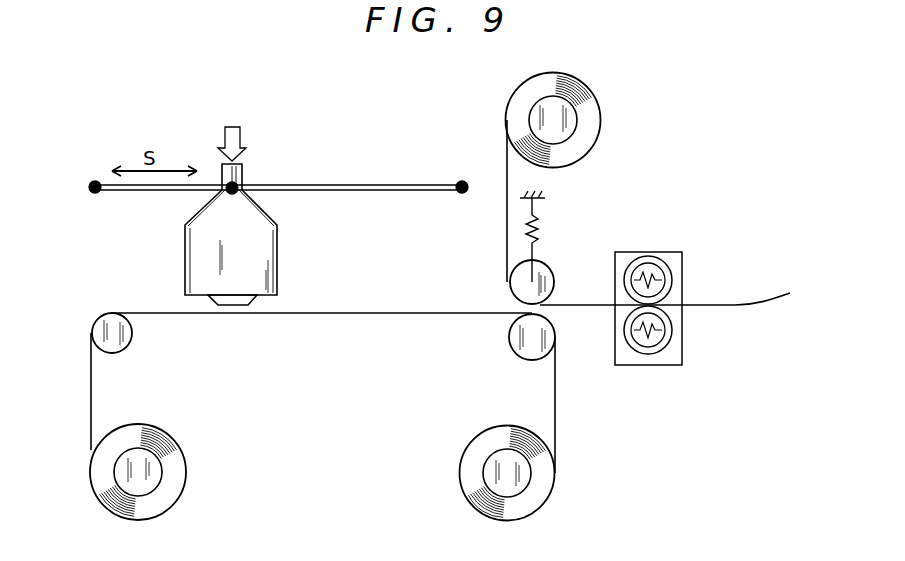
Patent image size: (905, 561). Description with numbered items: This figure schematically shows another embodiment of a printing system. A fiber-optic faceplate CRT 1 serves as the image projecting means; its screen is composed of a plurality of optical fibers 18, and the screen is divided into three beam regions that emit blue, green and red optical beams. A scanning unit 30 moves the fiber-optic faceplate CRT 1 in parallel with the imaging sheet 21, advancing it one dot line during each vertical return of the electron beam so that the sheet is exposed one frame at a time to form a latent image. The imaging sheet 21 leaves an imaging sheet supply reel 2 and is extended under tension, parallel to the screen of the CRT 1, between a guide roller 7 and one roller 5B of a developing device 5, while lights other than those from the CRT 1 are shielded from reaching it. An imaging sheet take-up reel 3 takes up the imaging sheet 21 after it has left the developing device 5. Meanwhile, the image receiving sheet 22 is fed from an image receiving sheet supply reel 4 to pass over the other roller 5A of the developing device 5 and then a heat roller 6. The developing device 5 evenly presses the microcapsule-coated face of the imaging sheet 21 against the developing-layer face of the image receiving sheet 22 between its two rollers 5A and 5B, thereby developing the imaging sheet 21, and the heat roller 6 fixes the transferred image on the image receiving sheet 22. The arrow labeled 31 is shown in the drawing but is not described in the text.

The fiber-optic faceplate CRT 1 is at (185, 255).
The imaging sheet supply reel 2 is at (142, 470).
The imaging sheet take-up reel 3 is at (496, 460).
The image receiving sheet supply reel 4 is at (568, 124).
The developing device 5 is at (550, 265).
The roller of developing device 5A is at (554, 278).
The roller of developing device 5B is at (511, 340).
The heat roller 6 is at (650, 368).
The guide roller 7 is at (92, 333).
The optical fibers 18 is at (210, 302).
The imaging sheet 21 is at (92, 395).
The image receiving sheet 22 is at (508, 193).
The scanning unit 30 is at (327, 182).
The pressing force 31 is at (235, 124).